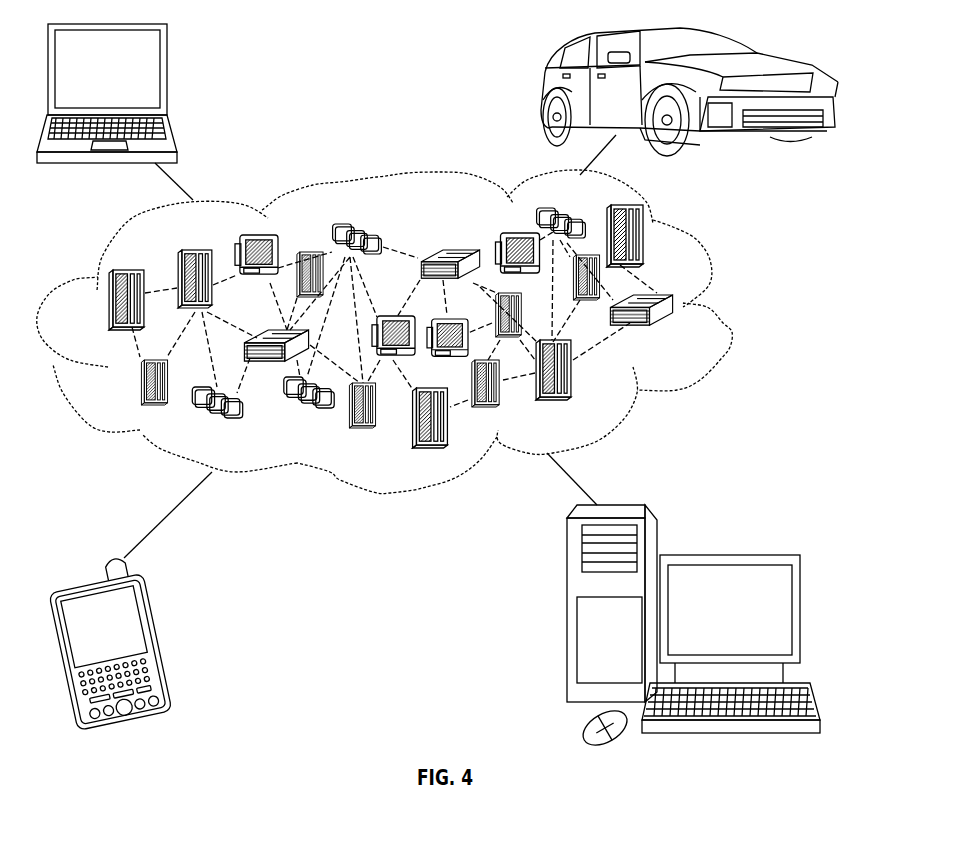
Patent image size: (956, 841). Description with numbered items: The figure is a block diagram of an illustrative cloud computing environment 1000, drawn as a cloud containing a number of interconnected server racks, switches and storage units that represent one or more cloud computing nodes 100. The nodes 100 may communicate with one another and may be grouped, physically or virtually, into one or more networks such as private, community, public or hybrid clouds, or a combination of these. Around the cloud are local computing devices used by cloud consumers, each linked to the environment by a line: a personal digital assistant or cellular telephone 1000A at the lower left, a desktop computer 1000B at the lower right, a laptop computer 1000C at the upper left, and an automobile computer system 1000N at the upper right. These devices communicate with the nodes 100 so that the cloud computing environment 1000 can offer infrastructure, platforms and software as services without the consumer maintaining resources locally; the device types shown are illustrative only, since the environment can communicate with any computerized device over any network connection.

The cloud computing node 100 is at (678, 333).
The cloud computing environment 1000 is at (417, 332).
The personal digital assistant (PDA) or cellular telephone 1000A is at (157, 633).
The desktop computer 1000B is at (727, 555).
The laptop computer 1000C is at (168, 76).
The automobile computer system 1000N is at (540, 90).